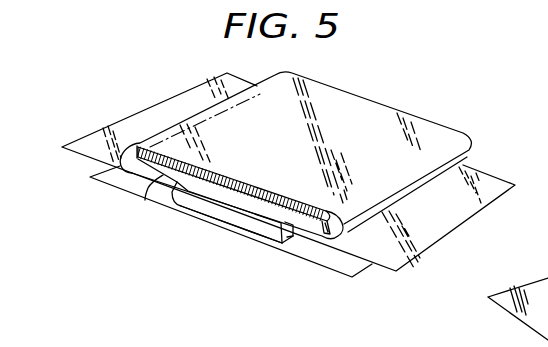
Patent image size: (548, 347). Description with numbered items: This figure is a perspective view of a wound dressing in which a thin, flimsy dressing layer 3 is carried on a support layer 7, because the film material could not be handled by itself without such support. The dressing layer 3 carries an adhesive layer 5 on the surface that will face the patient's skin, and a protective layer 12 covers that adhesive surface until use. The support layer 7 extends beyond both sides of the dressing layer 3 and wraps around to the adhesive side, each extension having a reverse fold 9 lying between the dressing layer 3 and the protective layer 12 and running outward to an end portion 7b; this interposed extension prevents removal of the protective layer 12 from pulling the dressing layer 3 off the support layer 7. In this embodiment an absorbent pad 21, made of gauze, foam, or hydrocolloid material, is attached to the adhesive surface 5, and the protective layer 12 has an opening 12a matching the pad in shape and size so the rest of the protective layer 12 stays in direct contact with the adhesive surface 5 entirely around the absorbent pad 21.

The dressing layer 3 is at (310, 218).
The adhesive layer 5 is at (177, 183).
The support layer 7 is at (180, 122).
The end portion 7b is at (62, 158).
The reverse fold 9 is at (145, 200).
The protective layer 12 is at (333, 256).
The opening 12a is at (222, 223).
The absorbent pad 21 is at (205, 205).